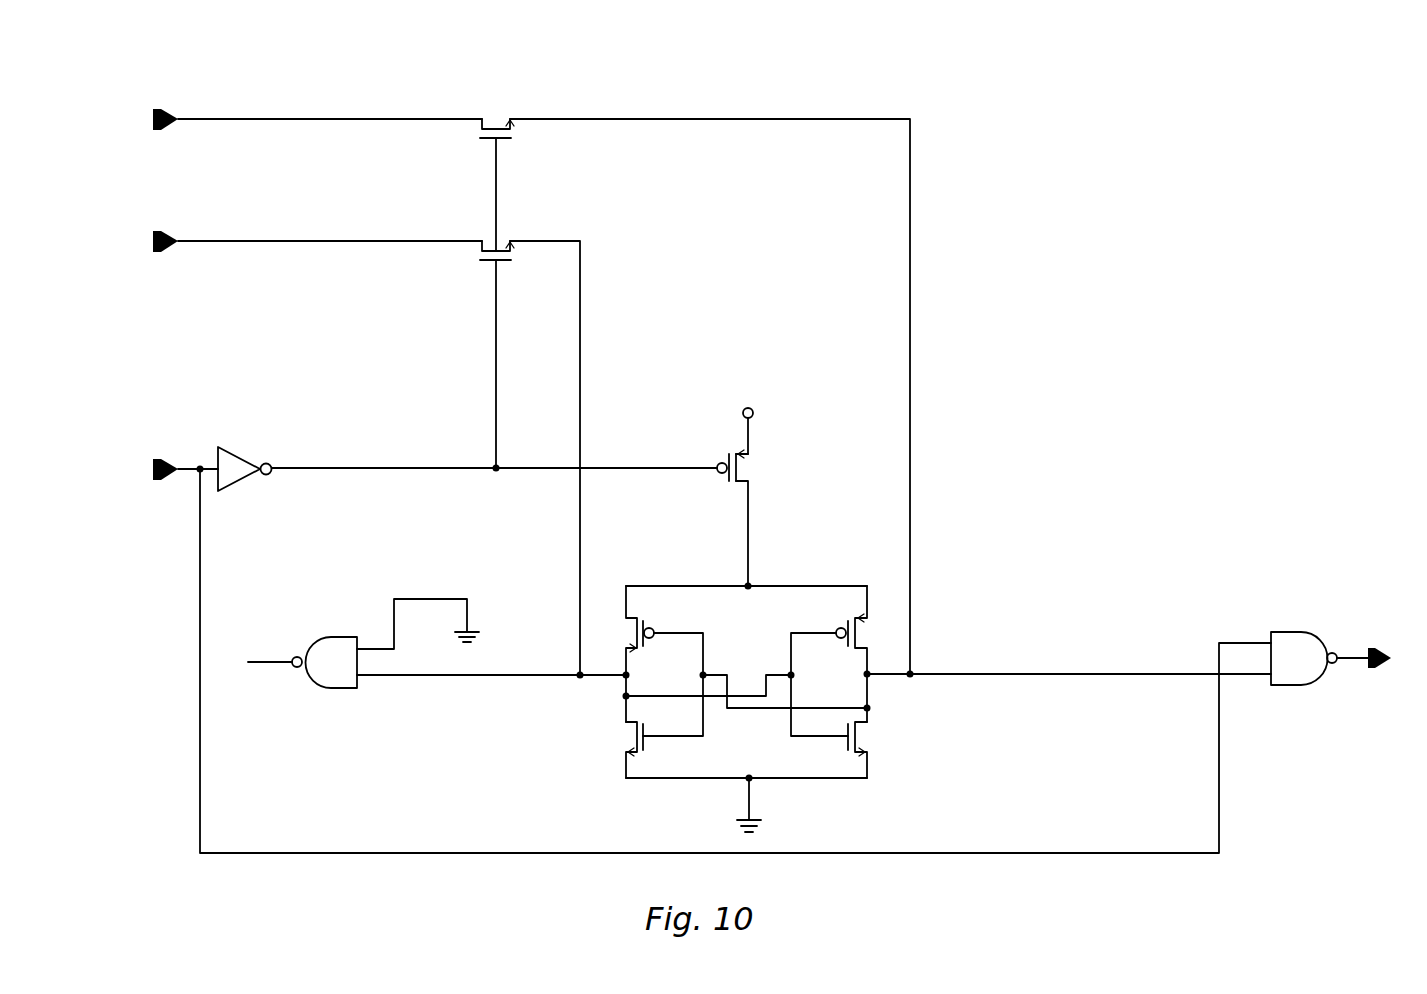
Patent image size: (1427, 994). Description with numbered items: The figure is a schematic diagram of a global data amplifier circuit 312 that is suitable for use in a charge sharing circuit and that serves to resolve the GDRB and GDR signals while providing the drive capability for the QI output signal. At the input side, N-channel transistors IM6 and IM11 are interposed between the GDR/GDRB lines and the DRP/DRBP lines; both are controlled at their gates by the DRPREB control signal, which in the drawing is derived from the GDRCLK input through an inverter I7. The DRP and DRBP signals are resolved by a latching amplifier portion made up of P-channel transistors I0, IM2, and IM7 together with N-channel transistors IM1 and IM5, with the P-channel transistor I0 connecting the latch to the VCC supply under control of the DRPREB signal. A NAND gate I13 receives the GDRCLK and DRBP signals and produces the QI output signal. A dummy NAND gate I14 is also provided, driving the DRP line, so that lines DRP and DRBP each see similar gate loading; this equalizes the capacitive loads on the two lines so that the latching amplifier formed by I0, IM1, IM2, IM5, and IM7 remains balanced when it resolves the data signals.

The global data amplifier circuit 312 is at (90, 78).
The N-channel transistor IM6 is at (509, 185).
The N-channel transistor IM11 is at (517, 354).
The inverter I7 is at (240, 458).
The P-channel transistor I0 is at (730, 508).
The dummy NAND gate I14 is at (363, 643).
The P-channel transistor IM7 is at (664, 654).
The N-channel transistor IM5 is at (664, 726).
The P-channel transistor IM2 is at (829, 654).
The N-channel transistor IM1 is at (829, 726).
The NAND gate I13 is at (1292, 645).